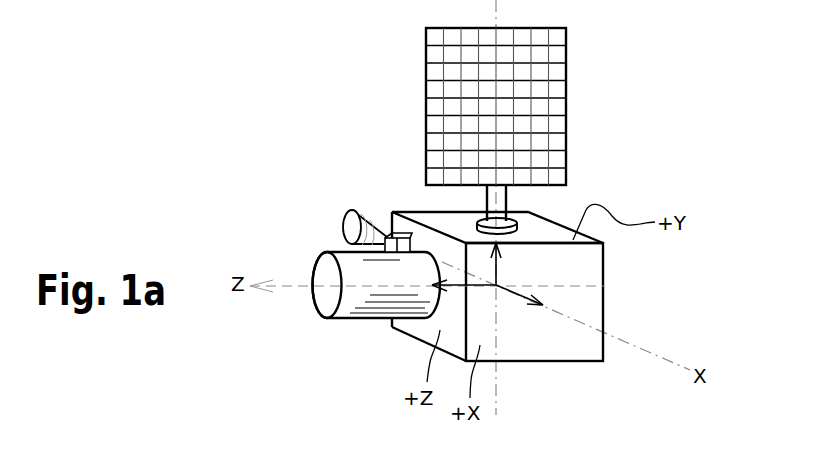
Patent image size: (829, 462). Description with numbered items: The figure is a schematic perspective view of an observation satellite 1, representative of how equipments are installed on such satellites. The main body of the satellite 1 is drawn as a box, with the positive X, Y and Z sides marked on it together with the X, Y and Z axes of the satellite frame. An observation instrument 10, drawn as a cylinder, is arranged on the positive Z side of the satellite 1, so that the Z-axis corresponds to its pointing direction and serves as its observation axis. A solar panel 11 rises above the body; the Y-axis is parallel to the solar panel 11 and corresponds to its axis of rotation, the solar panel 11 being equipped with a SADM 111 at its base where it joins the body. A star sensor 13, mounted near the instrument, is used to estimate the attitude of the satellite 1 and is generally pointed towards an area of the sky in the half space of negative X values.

The satellite 1 is at (616, 262).
The observation instrument 10 is at (362, 307).
The solar panel 11 is at (560, 36).
The SADM 111 is at (518, 221).
The star sensor 13 is at (363, 222).